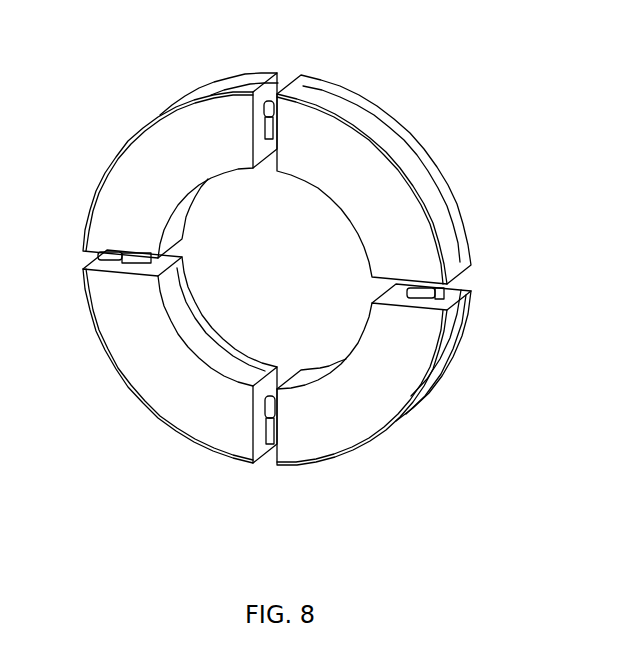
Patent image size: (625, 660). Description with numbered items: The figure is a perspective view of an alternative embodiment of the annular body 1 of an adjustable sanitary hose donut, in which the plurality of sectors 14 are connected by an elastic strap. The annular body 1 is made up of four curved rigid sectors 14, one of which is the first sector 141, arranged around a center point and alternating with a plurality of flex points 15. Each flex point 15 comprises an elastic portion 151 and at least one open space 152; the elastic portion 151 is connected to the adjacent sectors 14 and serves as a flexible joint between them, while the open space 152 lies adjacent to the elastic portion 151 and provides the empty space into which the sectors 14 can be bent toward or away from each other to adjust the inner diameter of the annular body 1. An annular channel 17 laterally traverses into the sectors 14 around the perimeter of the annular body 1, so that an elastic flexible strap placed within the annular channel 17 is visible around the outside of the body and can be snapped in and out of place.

The annular body 1 is at (282, 261).
The sector 14 is at (292, 270).
The first sector 141 is at (142, 384).
The flex point 15 is at (282, 261).
The elastic portion 151 is at (272, 133).
The open space 152 is at (268, 170).
The annular channel 17 is at (452, 213).